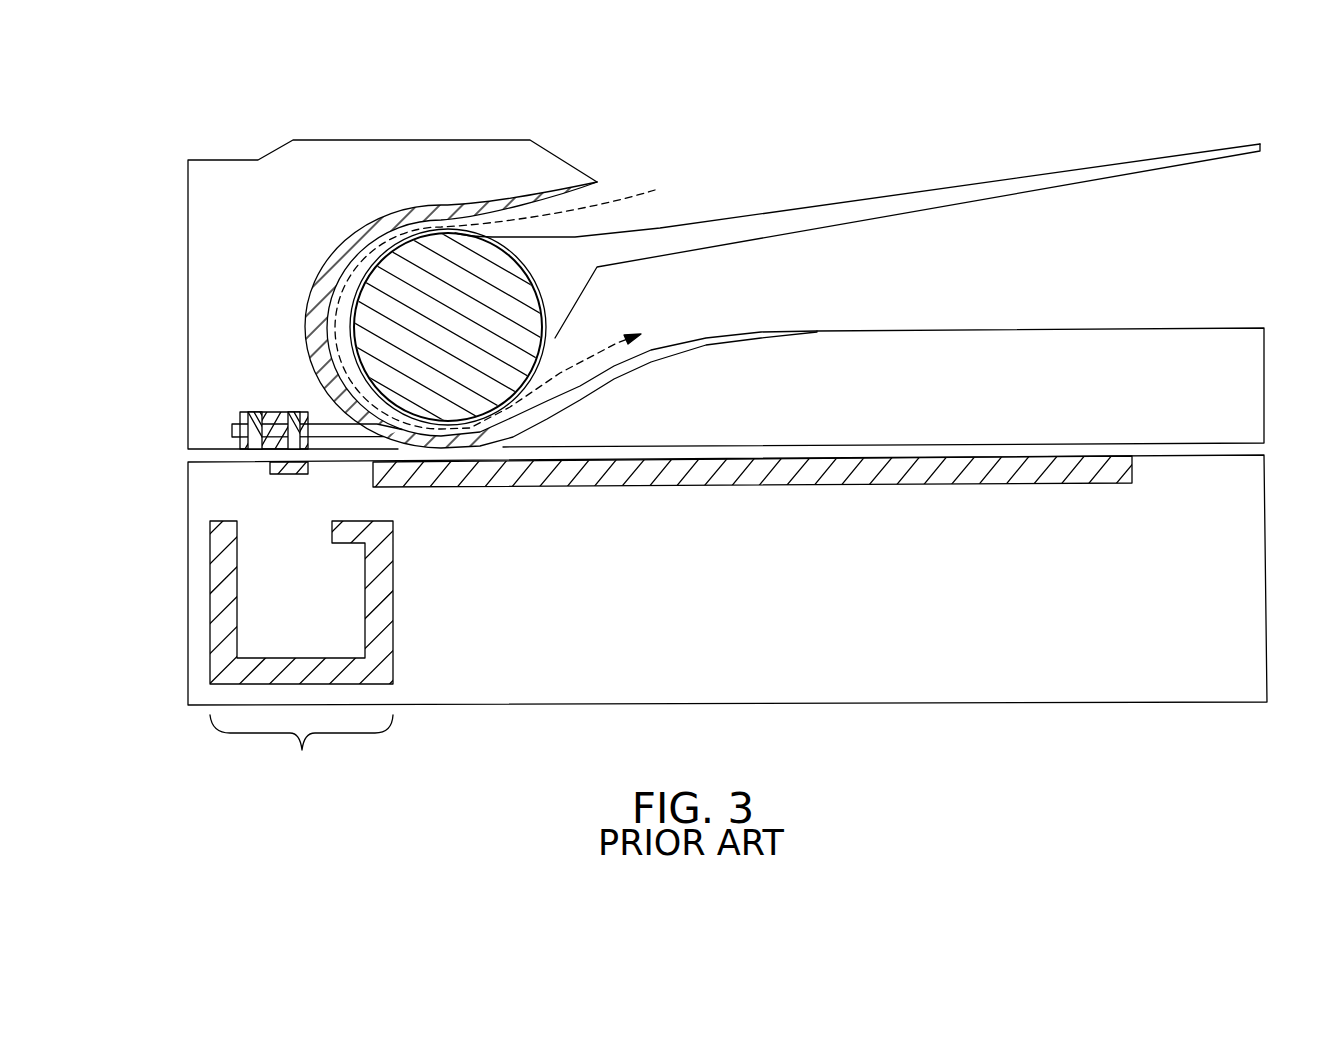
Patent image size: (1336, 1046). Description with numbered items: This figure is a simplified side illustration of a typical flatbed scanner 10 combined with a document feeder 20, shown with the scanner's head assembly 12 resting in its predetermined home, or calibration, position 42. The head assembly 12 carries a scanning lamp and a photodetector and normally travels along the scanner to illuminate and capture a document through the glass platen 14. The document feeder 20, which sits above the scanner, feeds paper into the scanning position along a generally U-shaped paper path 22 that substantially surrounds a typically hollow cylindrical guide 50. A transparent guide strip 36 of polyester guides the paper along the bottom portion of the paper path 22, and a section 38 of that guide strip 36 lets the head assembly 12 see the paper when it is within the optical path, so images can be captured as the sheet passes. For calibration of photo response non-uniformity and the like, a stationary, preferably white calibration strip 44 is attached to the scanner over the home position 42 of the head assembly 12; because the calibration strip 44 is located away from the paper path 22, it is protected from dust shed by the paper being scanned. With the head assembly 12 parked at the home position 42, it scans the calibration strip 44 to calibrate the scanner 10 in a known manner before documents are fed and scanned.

The scanner 10 is at (996, 744).
The head assembly 12 is at (397, 592).
The glass platen 14 is at (1082, 483).
The document feeder 20 is at (212, 134).
The paper path 22 is at (600, 203).
The guide strip 36 is at (321, 422).
The section of the guide strip 38 is at (485, 428).
The home position 42 is at (301, 751).
The calibration strip 44 is at (294, 476).
The cylindrical guide 50 is at (350, 285).